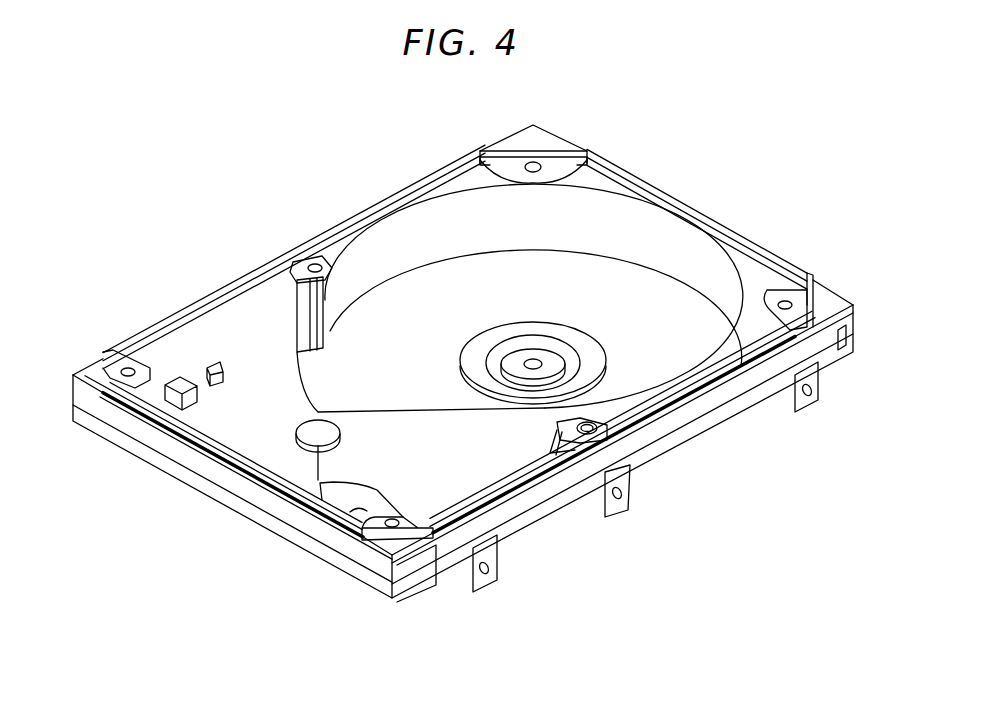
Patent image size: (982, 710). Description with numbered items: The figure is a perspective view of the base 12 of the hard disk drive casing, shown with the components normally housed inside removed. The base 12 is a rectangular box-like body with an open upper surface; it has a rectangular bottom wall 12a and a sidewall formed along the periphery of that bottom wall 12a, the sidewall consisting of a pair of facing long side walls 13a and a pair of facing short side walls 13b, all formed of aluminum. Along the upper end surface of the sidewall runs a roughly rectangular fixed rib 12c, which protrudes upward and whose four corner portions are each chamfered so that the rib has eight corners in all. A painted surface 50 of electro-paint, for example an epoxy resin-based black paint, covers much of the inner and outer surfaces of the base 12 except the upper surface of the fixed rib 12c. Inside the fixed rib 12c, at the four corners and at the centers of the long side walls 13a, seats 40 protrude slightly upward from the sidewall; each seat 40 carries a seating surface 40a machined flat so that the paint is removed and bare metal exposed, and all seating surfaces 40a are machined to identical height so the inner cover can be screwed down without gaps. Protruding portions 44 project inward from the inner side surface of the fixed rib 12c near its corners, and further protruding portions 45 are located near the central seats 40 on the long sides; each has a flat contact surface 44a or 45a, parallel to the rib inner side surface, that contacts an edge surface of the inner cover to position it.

The base 12 is at (585, 512).
The bottom wall 12a is at (253, 418).
The fixed rib 12c is at (343, 223).
The long side walls 13a is at (673, 470).
The short side walls 13b is at (828, 290).
The seat 40 is at (763, 283).
The seating surface 40a is at (797, 313).
The protruding portion 44 is at (483, 150).
The contact surface 44a is at (600, 158).
The protruding portion 45 is at (307, 253).
The contact surface 45a is at (310, 262).
The painted surface 50 is at (473, 173).